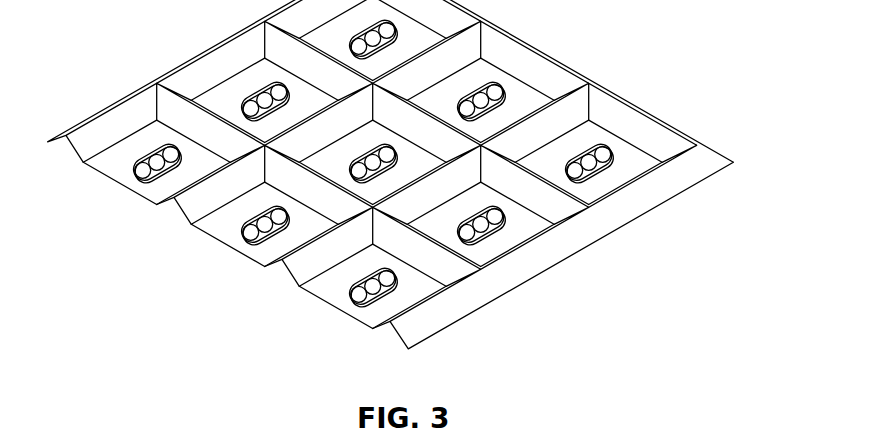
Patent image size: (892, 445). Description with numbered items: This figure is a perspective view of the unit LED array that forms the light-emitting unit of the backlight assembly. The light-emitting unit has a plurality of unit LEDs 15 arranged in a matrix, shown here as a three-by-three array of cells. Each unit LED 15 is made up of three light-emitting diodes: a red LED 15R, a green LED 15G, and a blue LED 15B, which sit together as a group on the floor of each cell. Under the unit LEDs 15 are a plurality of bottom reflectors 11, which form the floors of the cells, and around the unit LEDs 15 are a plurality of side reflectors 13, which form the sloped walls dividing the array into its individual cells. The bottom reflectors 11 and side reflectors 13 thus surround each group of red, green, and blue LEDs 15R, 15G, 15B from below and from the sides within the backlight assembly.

The bottom reflector 11 is at (631, 167).
The side reflector 13 is at (621, 97).
The unit LED 15 is at (653, 292).
The red LED 15R is at (503, 215).
The green LED 15G is at (489, 229).
The blue LED 15B is at (472, 239).